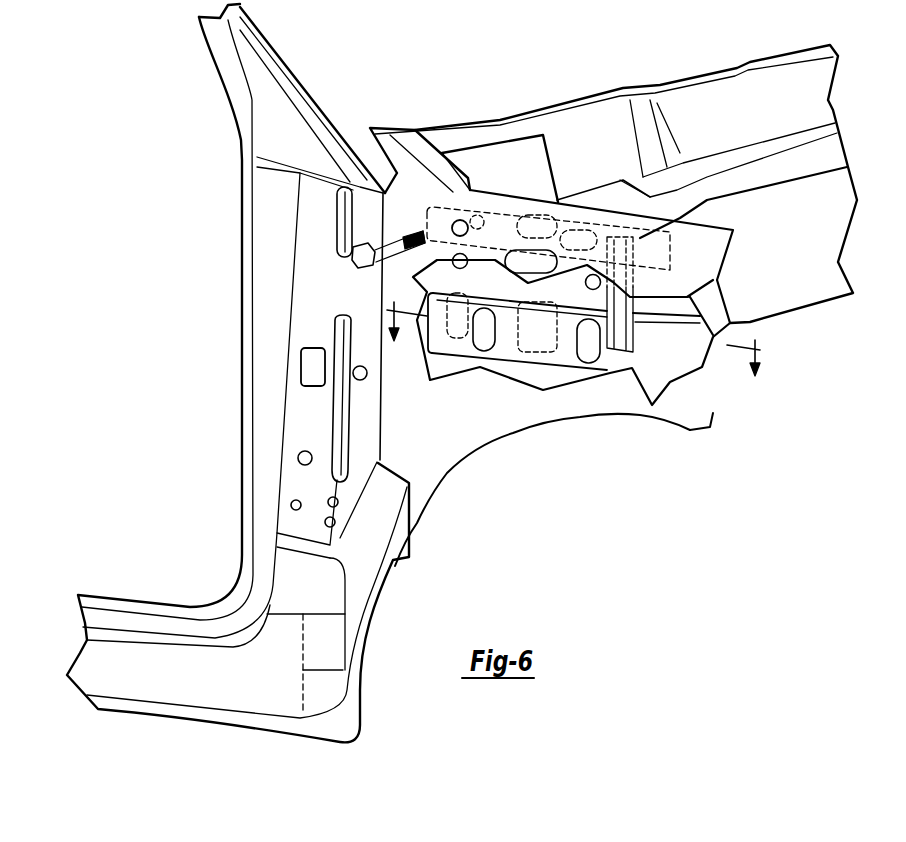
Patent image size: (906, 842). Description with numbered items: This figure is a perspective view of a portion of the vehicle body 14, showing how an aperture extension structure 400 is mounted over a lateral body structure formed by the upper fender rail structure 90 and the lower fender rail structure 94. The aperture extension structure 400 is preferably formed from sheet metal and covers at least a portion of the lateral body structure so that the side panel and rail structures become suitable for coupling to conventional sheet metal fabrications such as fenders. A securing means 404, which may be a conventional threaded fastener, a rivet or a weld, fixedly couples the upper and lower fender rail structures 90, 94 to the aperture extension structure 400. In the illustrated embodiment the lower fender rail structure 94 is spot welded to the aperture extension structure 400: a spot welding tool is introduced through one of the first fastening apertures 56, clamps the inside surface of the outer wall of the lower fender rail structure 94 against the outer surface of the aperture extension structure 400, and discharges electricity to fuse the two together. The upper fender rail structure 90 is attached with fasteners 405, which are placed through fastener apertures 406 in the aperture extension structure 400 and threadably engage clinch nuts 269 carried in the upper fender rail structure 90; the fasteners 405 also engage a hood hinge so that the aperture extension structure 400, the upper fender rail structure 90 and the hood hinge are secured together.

The vehicle body 14 is at (257, 746).
The first fastening apertures 56 is at (527, 340).
The upper fender rail structure 90 is at (670, 260).
The lower fender rail structure 94 is at (670, 355).
The clinch nuts 269 is at (473, 216).
The aperture extension structure 400 is at (625, 397).
The securing means 404 is at (532, 215).
The fasteners 405 is at (380, 257).
The fastener apertures 406 is at (455, 224).